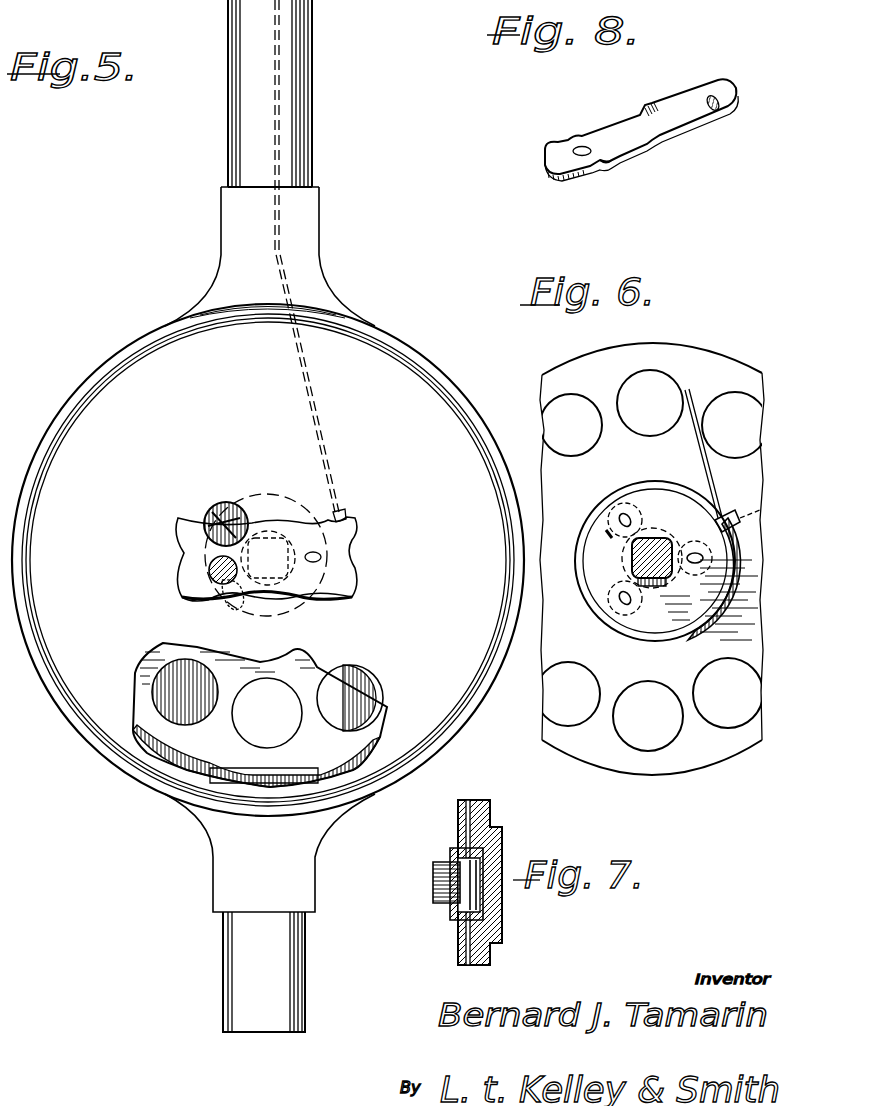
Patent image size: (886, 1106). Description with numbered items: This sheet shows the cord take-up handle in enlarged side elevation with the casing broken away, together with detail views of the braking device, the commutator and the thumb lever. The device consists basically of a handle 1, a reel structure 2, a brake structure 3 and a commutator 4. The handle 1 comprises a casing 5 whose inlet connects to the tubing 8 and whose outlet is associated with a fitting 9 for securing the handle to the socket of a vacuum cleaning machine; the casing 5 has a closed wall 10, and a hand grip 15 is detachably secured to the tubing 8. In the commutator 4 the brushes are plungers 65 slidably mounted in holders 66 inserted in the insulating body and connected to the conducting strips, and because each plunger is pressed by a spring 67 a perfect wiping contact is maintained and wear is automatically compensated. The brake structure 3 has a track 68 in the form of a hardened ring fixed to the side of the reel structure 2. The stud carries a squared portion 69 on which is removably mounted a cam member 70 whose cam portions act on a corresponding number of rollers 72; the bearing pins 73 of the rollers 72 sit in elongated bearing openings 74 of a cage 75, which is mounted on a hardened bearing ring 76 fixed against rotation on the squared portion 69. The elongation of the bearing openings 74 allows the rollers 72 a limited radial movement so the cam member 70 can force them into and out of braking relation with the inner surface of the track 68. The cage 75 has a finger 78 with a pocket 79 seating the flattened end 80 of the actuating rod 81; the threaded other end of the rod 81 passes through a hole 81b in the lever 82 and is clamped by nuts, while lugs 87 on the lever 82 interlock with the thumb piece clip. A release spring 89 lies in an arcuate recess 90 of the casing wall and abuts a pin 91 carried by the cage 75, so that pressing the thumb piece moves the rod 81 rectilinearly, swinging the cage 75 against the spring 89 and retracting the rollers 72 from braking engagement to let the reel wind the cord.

In FIG. 5, the handle 1 is at (312, 158).
In FIG. 5, the reel structure 2 is at (260, 715).
In FIG. 6, the reel structure 2 is at (690, 352).
In FIG. 5, the brake structure 3 is at (232, 502).
In FIG. 6, the brake structure 3 is at (588, 512).
In FIG. 5, the commutator 4 is at (207, 700).
In FIG. 7, the commutator 4 is at (493, 823).
In FIG. 5, the casing 5 is at (405, 366).
In FIG. 5, the tubing 8 is at (300, 90).
In FIG. 5, the fitting 9 is at (298, 955).
In FIG. 5, the closed wall 10 is at (431, 513).
In FIG. 5, the hand grip 15 is at (280, 715).
In FIG. 6, the hand grip 15 is at (616, 665).
In FIG. 7, the plungers 65 is at (435, 900).
In FIG. 7, the holders 66 is at (450, 850).
In FIG. 7, the spring 67 is at (500, 898).
In FIG. 6, the track 68 is at (622, 492).
In FIG. 5, the squared portion 69 is at (268, 540).
In FIG. 6, the squared portion 69 is at (668, 537).
In FIG. 6, the cam member 70 is at (612, 608).
In FIG. 6, the rollers 72 is at (690, 578).
In FIG. 6, the bearing pins 73 is at (622, 612).
In FIG. 6, the bearing openings 74 is at (615, 508).
In FIG. 5, the cage 75 is at (204, 521).
In FIG. 6, the cage 75 is at (600, 548).
In FIG. 6, the bearing ring 76 is at (652, 590).
In FIG. 5, the finger 78 is at (342, 550).
In FIG. 6, the finger 78 is at (770, 552).
In FIG. 6, the pocket 79 is at (760, 510).
In FIG. 6, the flattened end 80 is at (728, 518).
In FIG. 5, the actuating rod 81 is at (333, 462).
In FIG. 6, the actuating rod 81 is at (700, 402).
In FIG. 8, the hole 81b is at (582, 147).
In FIG. 8, the lever 82 is at (628, 123).
In FIG. 8, the lugs 87 is at (616, 167).
In FIG. 5, the release spring 89 is at (209, 567).
In FIG. 5, the arcuate recess 90 is at (226, 590).
In FIG. 5, the pin 91 is at (216, 505).
In FIG. 6, the pin 91 is at (592, 580).